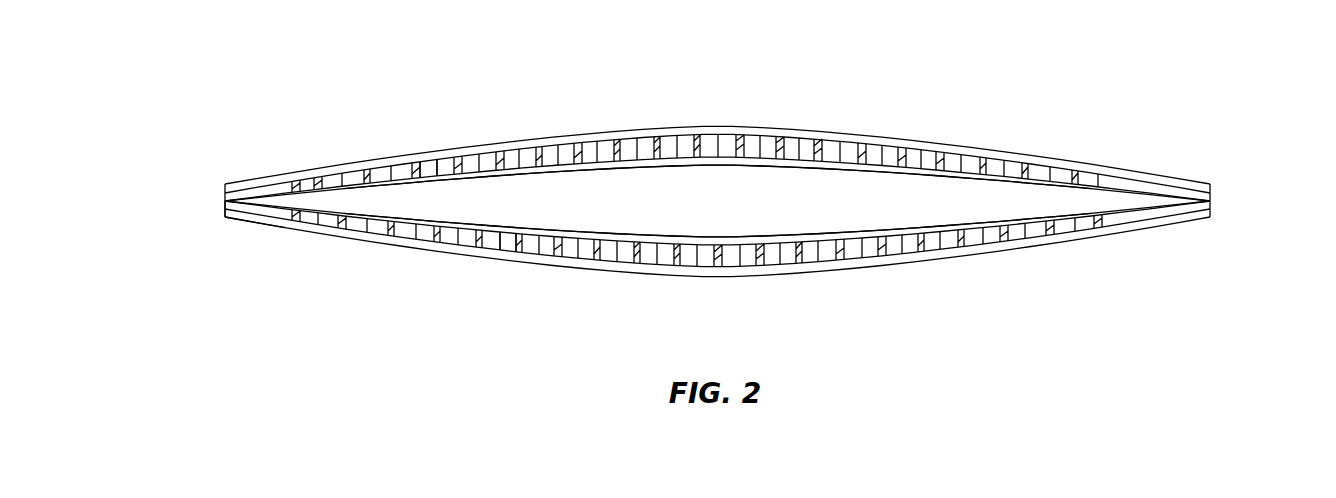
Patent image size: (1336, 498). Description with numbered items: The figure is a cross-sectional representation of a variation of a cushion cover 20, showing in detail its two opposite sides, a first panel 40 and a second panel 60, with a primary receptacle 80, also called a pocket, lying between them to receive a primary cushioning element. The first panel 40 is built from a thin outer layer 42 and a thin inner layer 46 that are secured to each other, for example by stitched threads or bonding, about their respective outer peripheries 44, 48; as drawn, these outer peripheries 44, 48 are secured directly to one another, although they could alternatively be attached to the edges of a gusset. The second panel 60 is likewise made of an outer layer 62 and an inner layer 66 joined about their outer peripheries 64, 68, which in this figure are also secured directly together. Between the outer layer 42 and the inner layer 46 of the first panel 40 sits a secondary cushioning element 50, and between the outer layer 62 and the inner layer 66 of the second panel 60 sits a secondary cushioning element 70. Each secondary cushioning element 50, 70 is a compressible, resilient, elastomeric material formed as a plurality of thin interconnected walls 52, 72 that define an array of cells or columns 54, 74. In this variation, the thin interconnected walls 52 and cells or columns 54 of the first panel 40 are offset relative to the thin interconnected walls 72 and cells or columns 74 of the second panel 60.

The cover 20 is at (210, 100).
The first panel 40 is at (1168, 172).
The outer layer 42 is at (707, 125).
The outer periphery 44 is at (1210, 187).
The inner layer 46 is at (840, 175).
The outer periphery 48 is at (1210, 199).
The secondary cushioning element 50 is at (792, 148).
The thin interconnected walls 52 is at (413, 167).
The cells or columns 54 is at (428, 167).
The second panel 60 is at (263, 242).
The outer layer 62 is at (712, 277).
The outer periphery 64 is at (238, 218).
The inner layer 66 is at (833, 230).
The outer periphery 68 is at (225, 205).
The secondary cushioning element 70 is at (802, 255).
The thin interconnected walls 72 is at (470, 250).
The cells or columns 74 is at (505, 245).
The primary receptacle 80 is at (684, 213).